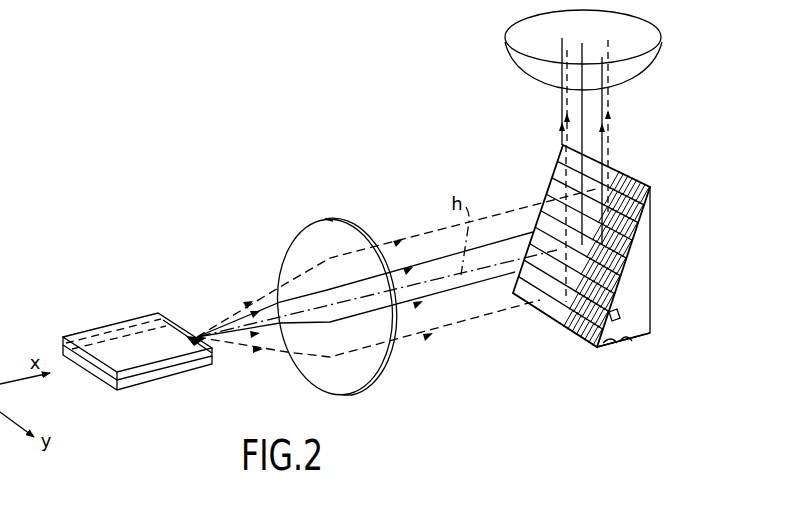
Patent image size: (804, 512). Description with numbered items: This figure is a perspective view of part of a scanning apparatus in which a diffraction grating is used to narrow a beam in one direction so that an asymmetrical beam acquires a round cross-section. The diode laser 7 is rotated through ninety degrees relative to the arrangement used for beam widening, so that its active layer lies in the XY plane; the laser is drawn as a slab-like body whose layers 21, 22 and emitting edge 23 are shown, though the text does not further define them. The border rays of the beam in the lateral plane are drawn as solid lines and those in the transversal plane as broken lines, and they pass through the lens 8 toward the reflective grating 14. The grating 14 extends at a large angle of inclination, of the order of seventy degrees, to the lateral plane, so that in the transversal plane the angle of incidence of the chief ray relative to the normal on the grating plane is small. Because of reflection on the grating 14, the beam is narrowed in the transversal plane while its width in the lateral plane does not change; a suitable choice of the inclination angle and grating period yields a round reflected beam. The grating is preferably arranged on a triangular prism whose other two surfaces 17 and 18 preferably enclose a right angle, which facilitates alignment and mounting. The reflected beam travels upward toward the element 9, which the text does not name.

The diode laser 7 is at (126, 306).
The lower slab 21 is at (168, 380).
The upper slab 22 is at (101, 386).
The emitting edge 23 is at (178, 328).
The collimating lens 8 is at (343, 378).
The reflective grating 14 is at (646, 170).
The prism surface 17 is at (652, 259).
The prism surface 18 is at (647, 336).
The focusing lens 9 is at (522, 43).